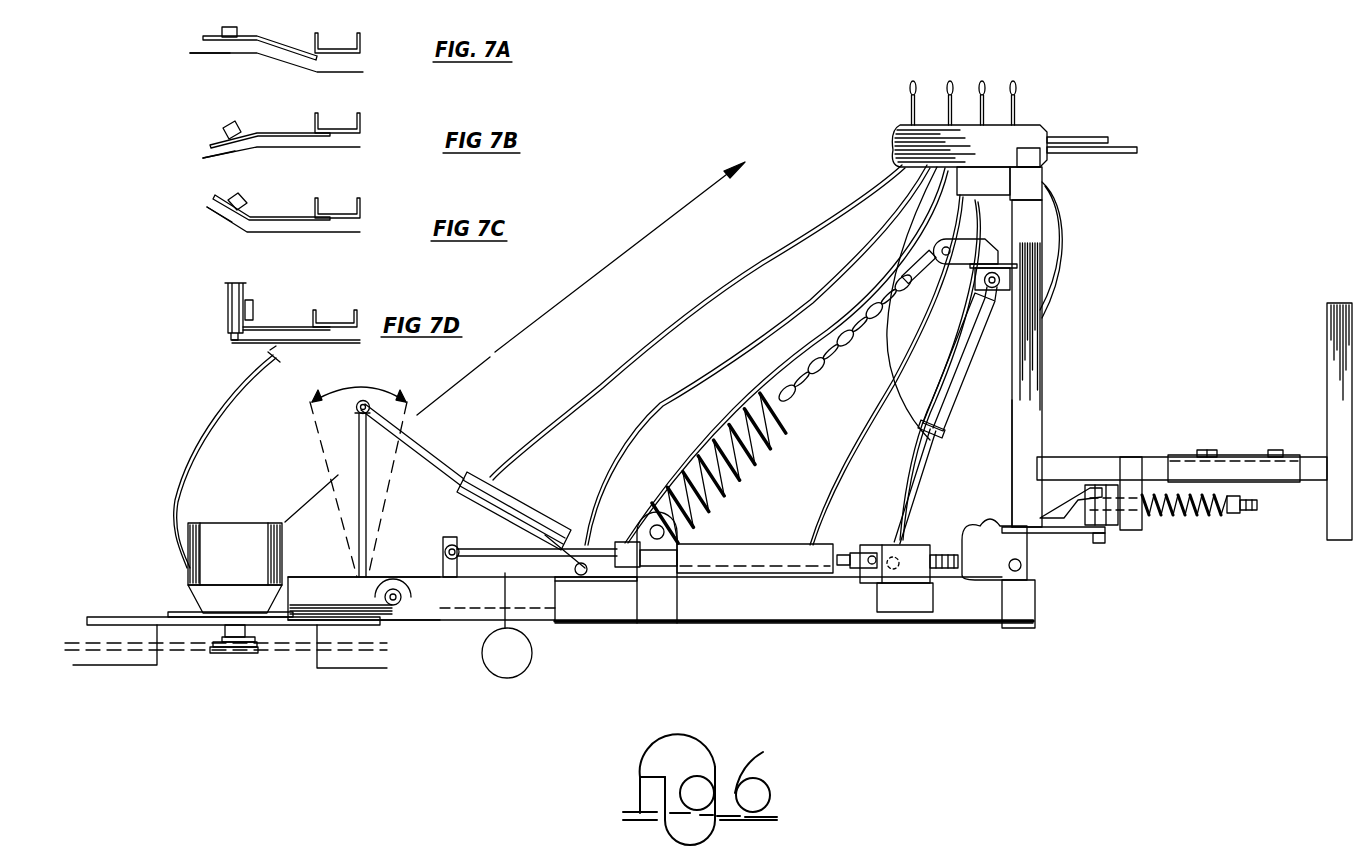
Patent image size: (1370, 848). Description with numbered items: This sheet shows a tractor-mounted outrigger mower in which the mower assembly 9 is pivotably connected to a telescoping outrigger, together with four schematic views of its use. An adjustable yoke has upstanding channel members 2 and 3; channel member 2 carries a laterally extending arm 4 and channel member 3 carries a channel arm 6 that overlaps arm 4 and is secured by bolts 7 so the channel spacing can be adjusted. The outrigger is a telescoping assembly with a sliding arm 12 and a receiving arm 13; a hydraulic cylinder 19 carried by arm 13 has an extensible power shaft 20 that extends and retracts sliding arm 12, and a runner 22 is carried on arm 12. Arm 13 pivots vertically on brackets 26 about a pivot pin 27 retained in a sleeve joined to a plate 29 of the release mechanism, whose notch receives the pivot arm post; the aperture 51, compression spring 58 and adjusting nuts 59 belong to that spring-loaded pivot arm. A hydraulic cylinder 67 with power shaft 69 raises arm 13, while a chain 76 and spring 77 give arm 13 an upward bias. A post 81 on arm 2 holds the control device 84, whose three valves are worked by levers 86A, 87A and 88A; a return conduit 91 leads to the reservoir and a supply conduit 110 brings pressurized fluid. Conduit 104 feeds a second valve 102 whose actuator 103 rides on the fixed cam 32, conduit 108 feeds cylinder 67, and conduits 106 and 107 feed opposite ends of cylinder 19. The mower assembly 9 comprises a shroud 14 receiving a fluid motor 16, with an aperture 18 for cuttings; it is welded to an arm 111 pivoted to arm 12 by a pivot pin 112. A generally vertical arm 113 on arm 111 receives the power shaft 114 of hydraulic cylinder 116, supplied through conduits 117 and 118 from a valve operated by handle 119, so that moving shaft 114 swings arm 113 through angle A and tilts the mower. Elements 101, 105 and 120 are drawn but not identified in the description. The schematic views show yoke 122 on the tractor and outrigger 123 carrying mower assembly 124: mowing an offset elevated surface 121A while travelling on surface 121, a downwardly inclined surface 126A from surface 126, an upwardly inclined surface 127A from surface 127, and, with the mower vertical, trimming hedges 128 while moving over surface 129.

In FIG. 6, the upstanding channel member 2 is at (1040, 408).
In FIG. 6, the upstanding channel member 3 is at (1327, 426).
In FIG. 6, the laterally extending arm 4 is at (1075, 456).
In FIG. 6, the laterally extending channel arm 6 is at (1250, 466).
In FIG. 6, the bolts 7 is at (1207, 450).
In FIG. 6, the mower assembly 9 is at (76, 622).
In FIG. 6, the sliding arm 12 is at (546, 605).
In FIG. 6, the receiving arm 13 is at (771, 613).
In FIG. 6, the shroud 14 is at (287, 637).
In FIG. 6, the fluid power motor 16 is at (242, 535).
In FIG. 6, the aperture 18 is at (287, 682).
In FIG. 6, the hydraulic cylinder 19 is at (748, 556).
In FIG. 6, the extensible power shaft 20 is at (486, 545).
In FIG. 6, the runner 22 is at (520, 667).
In FIG. 6, the brackets 26 is at (1030, 597).
In FIG. 6, the pivot pin 27 is at (1033, 557).
In FIG. 6, the plate 29 is at (1100, 531).
In FIG. 6, the cam 32 is at (997, 574).
In FIG. 6, the aperture 51 is at (1105, 541).
In FIG. 6, the compression spring 58 is at (1226, 511).
In FIG. 6, the adjusting nuts 59 is at (1256, 503).
In FIG. 6, the hydraulic cylinder 67 is at (968, 340).
In FIG. 6, the power shaft 69 is at (920, 468).
In FIG. 6, the chain 76 is at (838, 358).
In FIG. 6, the spring 77 is at (790, 405).
In FIG. 6, the post 81 is at (1042, 222).
In FIG. 6, the control device 84 is at (1030, 136).
In FIG. 6, the lever 86A is at (951, 81).
In FIG. 6, the lever 87A is at (983, 81).
In FIG. 6, the lever 88A is at (1013, 81).
In FIG. 6, the return fluid conduit 91 is at (1090, 137).
In FIG. 6, the hose 101 is at (220, 410).
In FIG. 6, the second valve 102 is at (895, 588).
In FIG. 6, the actuator 103 is at (946, 555).
In FIG. 6, the conduit 104 is at (1052, 293).
In FIG. 6, the direction arrow 105 is at (546, 316).
In FIG. 6, the fluid flow conduit 106 is at (818, 490).
In FIG. 6, the fluid flow conduit 107 is at (859, 277).
In FIG. 6, the conduit 108 is at (878, 339).
In FIG. 6, the pressurized fluid supply conduit 110 is at (1125, 150).
In FIG. 6, the arm 111 is at (342, 577).
In FIG. 6, the pivot pin 112 is at (379, 582).
In FIG. 6, the generally vertically extending arm 113 is at (360, 456).
In FIG. 6, the power shaft 114 is at (420, 449).
In FIG. 6, the hydraulic cylinder 116 is at (500, 496).
In FIG. 6, the conduit 117 is at (590, 365).
In FIG. 6, the conduit 118 is at (627, 431).
In FIG. 6, the handle 119 is at (913, 82).
In FIG. 6, the link 120 is at (581, 562).
In FIG. 7A, the surface 121 is at (358, 73).
In FIG. 7A, the offset elevated surface 121A is at (205, 55).
In FIG. 7A, the yoke 122 is at (349, 42).
In FIG. 7B, the yoke 122 is at (360, 115).
In FIG. 7C, the yoke 122 is at (360, 202).
In FIG. 7D, the yoke 122 is at (318, 310).
In FIG. 7A, the outrigger 123 is at (288, 38).
In FIG. 7B, the outrigger 123 is at (293, 133).
In FIG. 7C, the outrigger 123 is at (271, 201).
In FIG. 7A, the mower assembly 124 is at (230, 27).
In FIG. 7B, the mower assembly 124 is at (232, 122).
In FIG. 7C, the mower assembly 124 is at (233, 192).
In FIG. 7D, the mower assembly 124 is at (253, 306).
In FIG. 7B, the surface 126 is at (343, 148).
In FIG. 7B, the downwardly inclined surface 126A is at (226, 155).
In FIG. 7C, the surface 127 is at (338, 234).
In FIG. 7C, the upwardly inclined surface 127A is at (225, 220).
In FIG. 7D, the hedges 128 is at (226, 293).
In FIG. 7D, the surface 129 is at (355, 344).